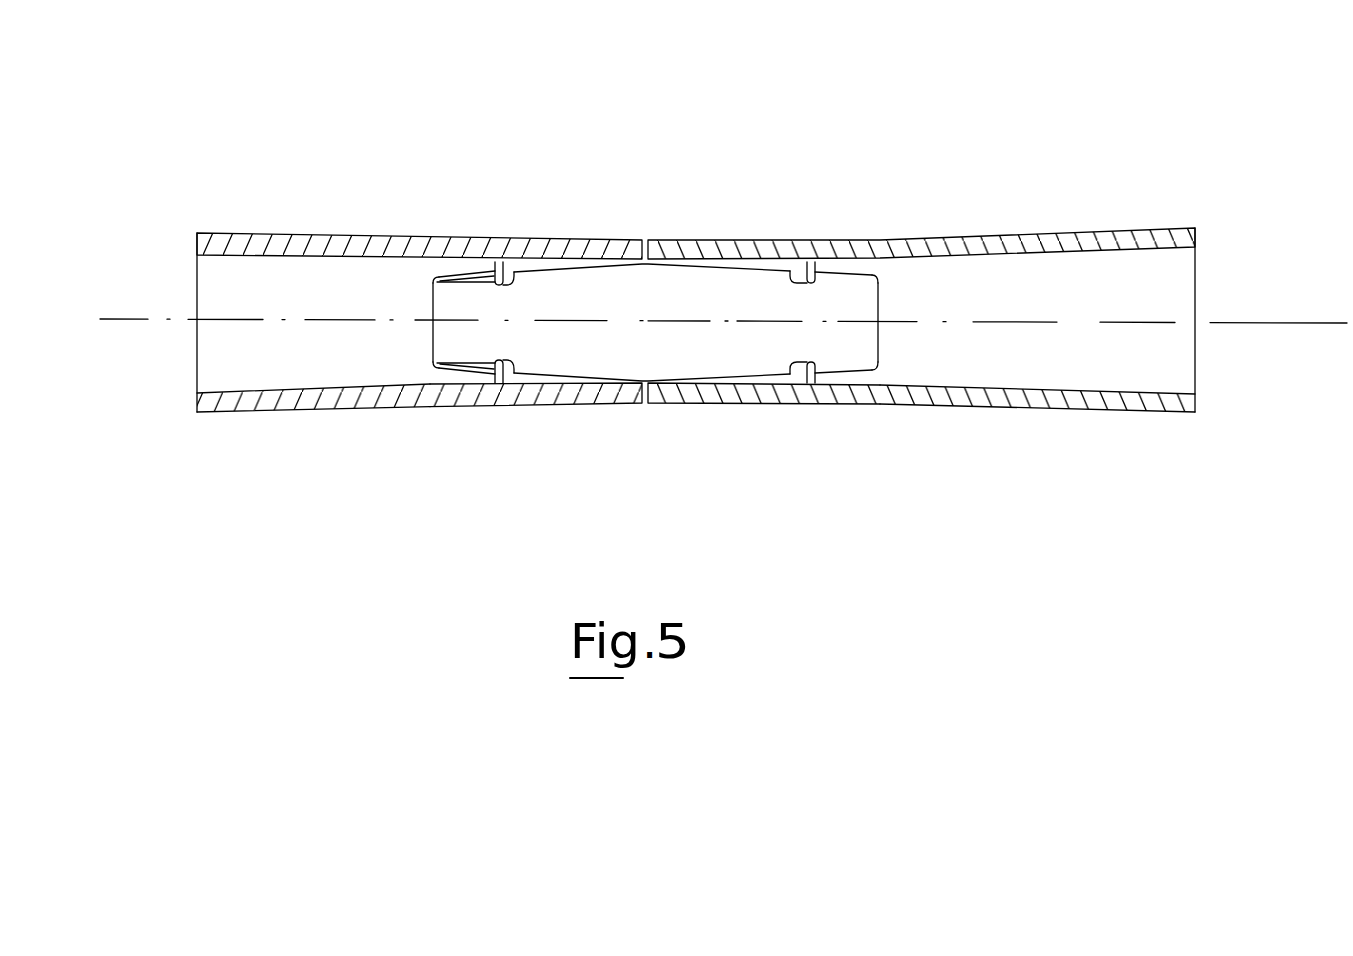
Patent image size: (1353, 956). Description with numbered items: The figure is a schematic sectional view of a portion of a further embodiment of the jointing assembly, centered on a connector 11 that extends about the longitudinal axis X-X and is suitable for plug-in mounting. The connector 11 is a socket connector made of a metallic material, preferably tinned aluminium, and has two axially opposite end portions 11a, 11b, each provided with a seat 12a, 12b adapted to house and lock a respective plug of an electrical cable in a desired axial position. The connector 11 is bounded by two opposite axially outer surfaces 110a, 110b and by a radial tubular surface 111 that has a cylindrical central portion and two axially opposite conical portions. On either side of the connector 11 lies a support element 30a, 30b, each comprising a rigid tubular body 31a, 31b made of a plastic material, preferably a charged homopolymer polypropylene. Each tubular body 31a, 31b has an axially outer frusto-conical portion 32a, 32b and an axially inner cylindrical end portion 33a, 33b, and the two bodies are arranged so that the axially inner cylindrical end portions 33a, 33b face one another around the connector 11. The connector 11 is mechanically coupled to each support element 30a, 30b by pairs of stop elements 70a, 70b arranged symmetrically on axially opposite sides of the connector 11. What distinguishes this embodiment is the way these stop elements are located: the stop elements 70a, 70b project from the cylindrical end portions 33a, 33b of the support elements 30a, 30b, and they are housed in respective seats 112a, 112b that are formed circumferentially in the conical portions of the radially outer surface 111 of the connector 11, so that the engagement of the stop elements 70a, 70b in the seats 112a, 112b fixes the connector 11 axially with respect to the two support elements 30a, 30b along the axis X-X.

The connector 11 is at (634, 380).
The end portion 11a is at (868, 380).
The end portion 11b is at (442, 380).
The seat 12a is at (887, 348).
The seat 12b is at (414, 344).
The support element 30a is at (954, 342).
The support element 30b is at (393, 325).
The tubular body 31a is at (1025, 300).
The tubular body 31b is at (326, 290).
The frusto-conical portion 32a is at (1118, 438).
The frusto-conical portion 32b is at (271, 430).
The cylindrical end portion 33a is at (720, 417).
The cylindrical end portion 33b is at (588, 419).
The stop element 70a is at (810, 278).
The stop element 70b is at (490, 276).
The axially outer surface 110a is at (880, 303).
The axially outer surface 110b is at (433, 305).
The radial tubular surface 111 is at (470, 282).
The seat 112a is at (838, 274).
The seat 112b is at (482, 288).
The longitudinal axis X is at (112, 322).